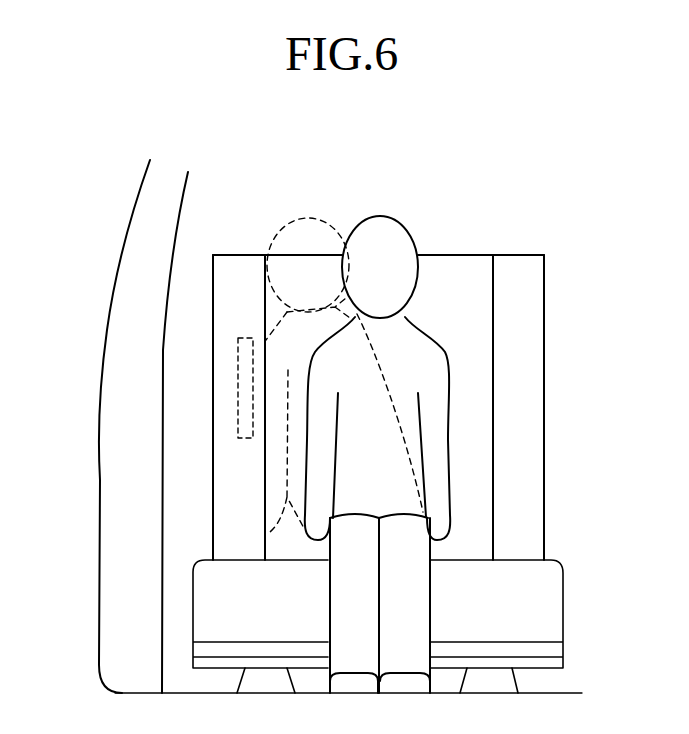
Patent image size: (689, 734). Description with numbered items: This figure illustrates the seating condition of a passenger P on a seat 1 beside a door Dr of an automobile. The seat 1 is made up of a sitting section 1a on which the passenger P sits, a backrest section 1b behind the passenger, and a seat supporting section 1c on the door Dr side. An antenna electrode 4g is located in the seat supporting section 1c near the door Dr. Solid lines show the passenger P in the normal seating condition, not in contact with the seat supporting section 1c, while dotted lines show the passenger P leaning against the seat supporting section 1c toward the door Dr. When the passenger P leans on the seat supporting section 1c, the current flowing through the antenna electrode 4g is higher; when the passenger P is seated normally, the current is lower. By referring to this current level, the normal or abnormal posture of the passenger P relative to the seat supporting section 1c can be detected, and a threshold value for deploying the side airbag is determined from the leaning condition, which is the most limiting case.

The seat 1 is at (330, 440).
The sitting section 1a is at (467, 560).
The backrest section 1b is at (463, 296).
The seat supporting section 1c is at (515, 382).
The antenna electrode 4g is at (238, 388).
The door Dr is at (115, 266).
The passenger P is at (392, 216).